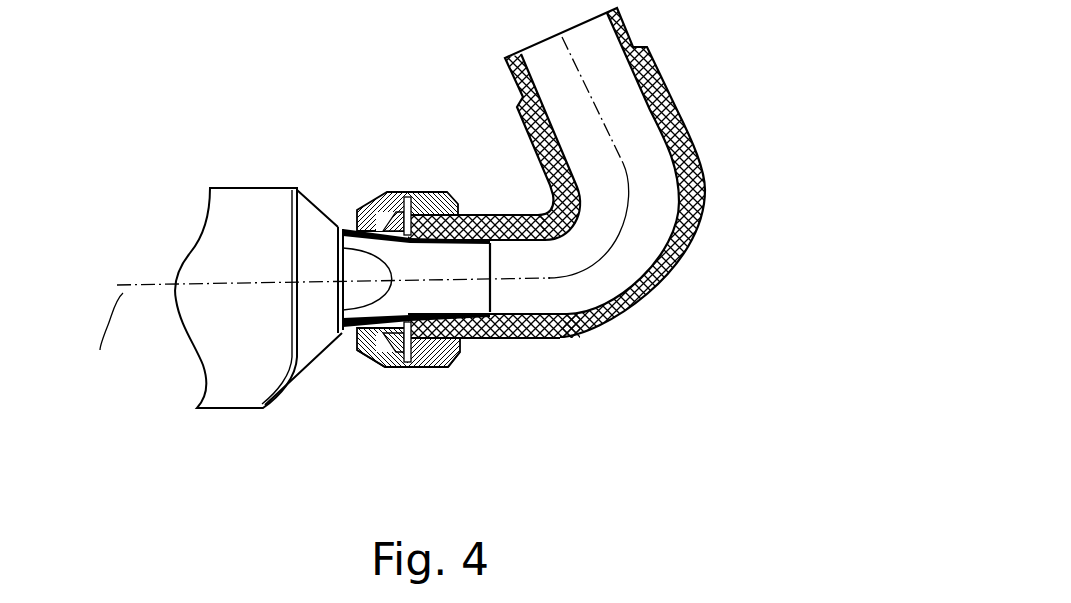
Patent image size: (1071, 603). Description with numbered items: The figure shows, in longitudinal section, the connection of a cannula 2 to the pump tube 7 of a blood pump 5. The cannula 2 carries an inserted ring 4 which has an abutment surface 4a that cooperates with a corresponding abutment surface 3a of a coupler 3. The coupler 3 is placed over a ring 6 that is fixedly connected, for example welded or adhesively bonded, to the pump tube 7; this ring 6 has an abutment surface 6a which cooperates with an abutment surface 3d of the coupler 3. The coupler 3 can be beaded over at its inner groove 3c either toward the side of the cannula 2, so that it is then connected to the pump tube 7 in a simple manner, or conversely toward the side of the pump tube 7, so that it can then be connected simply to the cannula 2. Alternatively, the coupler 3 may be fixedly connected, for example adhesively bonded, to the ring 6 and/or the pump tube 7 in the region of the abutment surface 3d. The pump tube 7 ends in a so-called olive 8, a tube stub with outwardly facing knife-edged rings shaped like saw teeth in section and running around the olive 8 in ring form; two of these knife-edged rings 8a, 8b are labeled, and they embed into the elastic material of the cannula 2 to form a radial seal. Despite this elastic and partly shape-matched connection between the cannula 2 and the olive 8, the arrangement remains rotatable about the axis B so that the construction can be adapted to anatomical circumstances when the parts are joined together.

The cannula 2 is at (550, 337).
The coupler 3 is at (382, 135).
The abutment surface of the coupler 3a is at (430, 190).
The inner groove 3c is at (400, 370).
The abutment surface of the coupler 3d is at (360, 370).
The inserted ring 4 is at (435, 370).
The abutment surface of the inserted ring 4a is at (453, 370).
The blood pump 5 is at (260, 212).
The ring 6 is at (405, 202).
The abutment surface of the ring 6a is at (358, 207).
The pump tube 7 is at (345, 338).
The olive 8 is at (430, 293).
The knife-edged ring 8a is at (447, 245).
The knife-edged ring 8b is at (498, 247).
The axis B is at (127, 327).